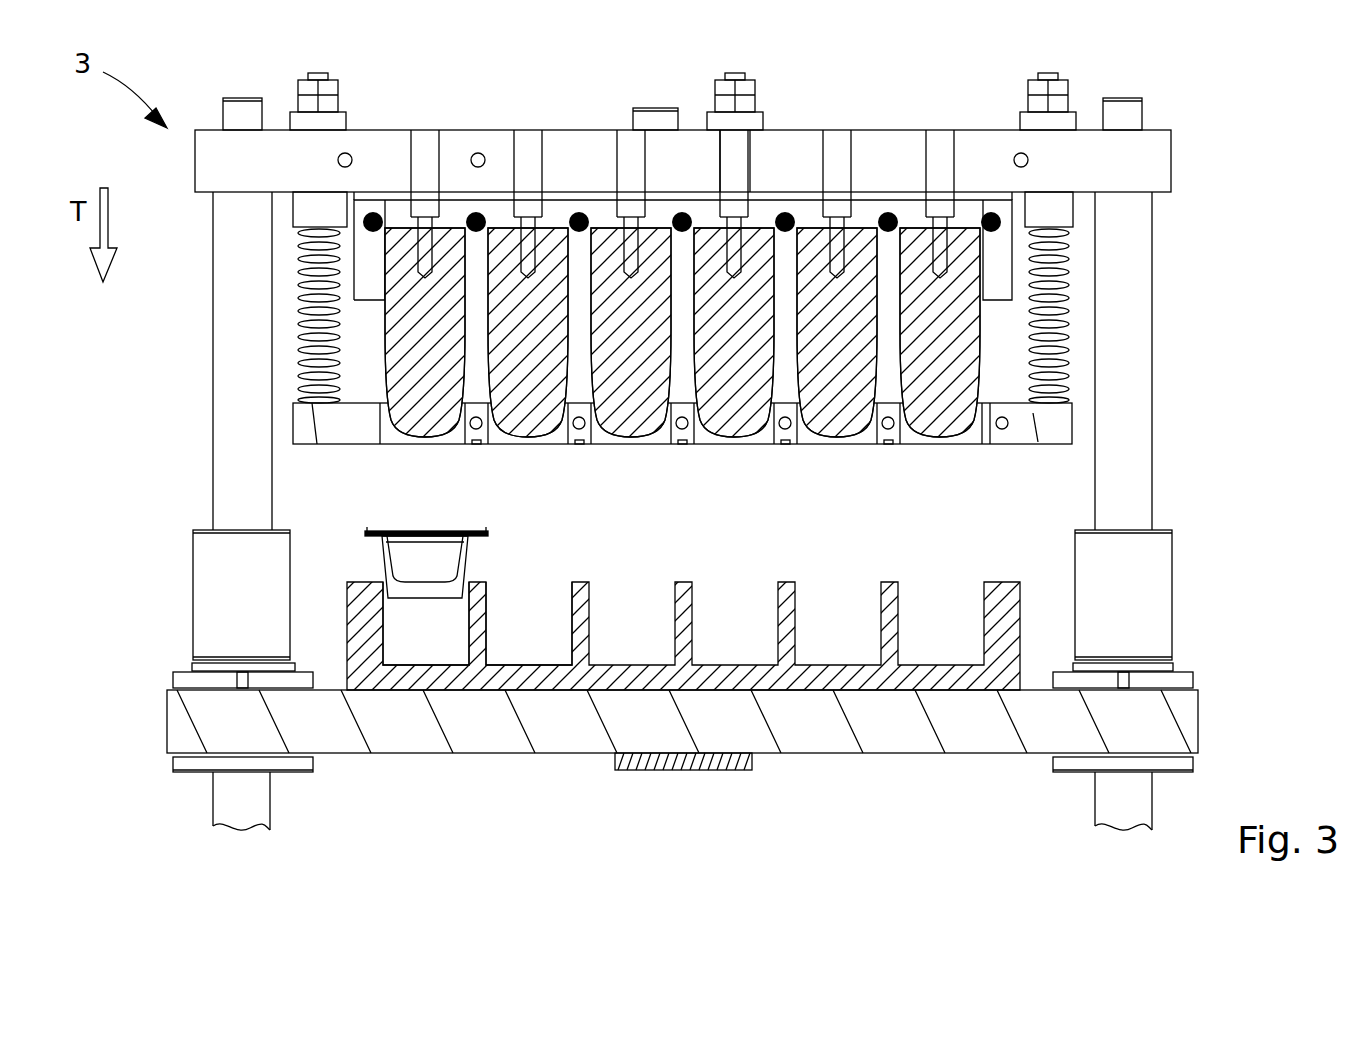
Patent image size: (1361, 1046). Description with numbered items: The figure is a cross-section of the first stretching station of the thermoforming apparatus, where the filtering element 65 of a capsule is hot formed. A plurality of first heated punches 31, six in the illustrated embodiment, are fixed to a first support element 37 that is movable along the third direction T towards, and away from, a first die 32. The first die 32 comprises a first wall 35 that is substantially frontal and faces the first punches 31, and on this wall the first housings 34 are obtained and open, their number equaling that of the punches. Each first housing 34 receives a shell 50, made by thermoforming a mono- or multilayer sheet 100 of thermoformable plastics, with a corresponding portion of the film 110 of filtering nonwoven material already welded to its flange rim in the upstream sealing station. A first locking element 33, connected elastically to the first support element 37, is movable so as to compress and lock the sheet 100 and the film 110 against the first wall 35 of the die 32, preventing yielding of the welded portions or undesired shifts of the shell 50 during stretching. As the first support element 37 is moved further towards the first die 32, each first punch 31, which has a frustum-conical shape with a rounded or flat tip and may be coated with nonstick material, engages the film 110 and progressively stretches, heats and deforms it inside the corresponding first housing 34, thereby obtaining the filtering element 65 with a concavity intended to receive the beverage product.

The first heated punch 31 is at (450, 257).
The first support element 37 is at (572, 147).
The first locking element 33 is at (303, 422).
The first wall 35 is at (628, 582).
The first housing 34 is at (570, 615).
The first die 32 is at (625, 680).
The shell 50 is at (386, 563).
The filtering element 65 is at (413, 531).
The sheet 100 is at (470, 538).
The film 110 is at (482, 531).